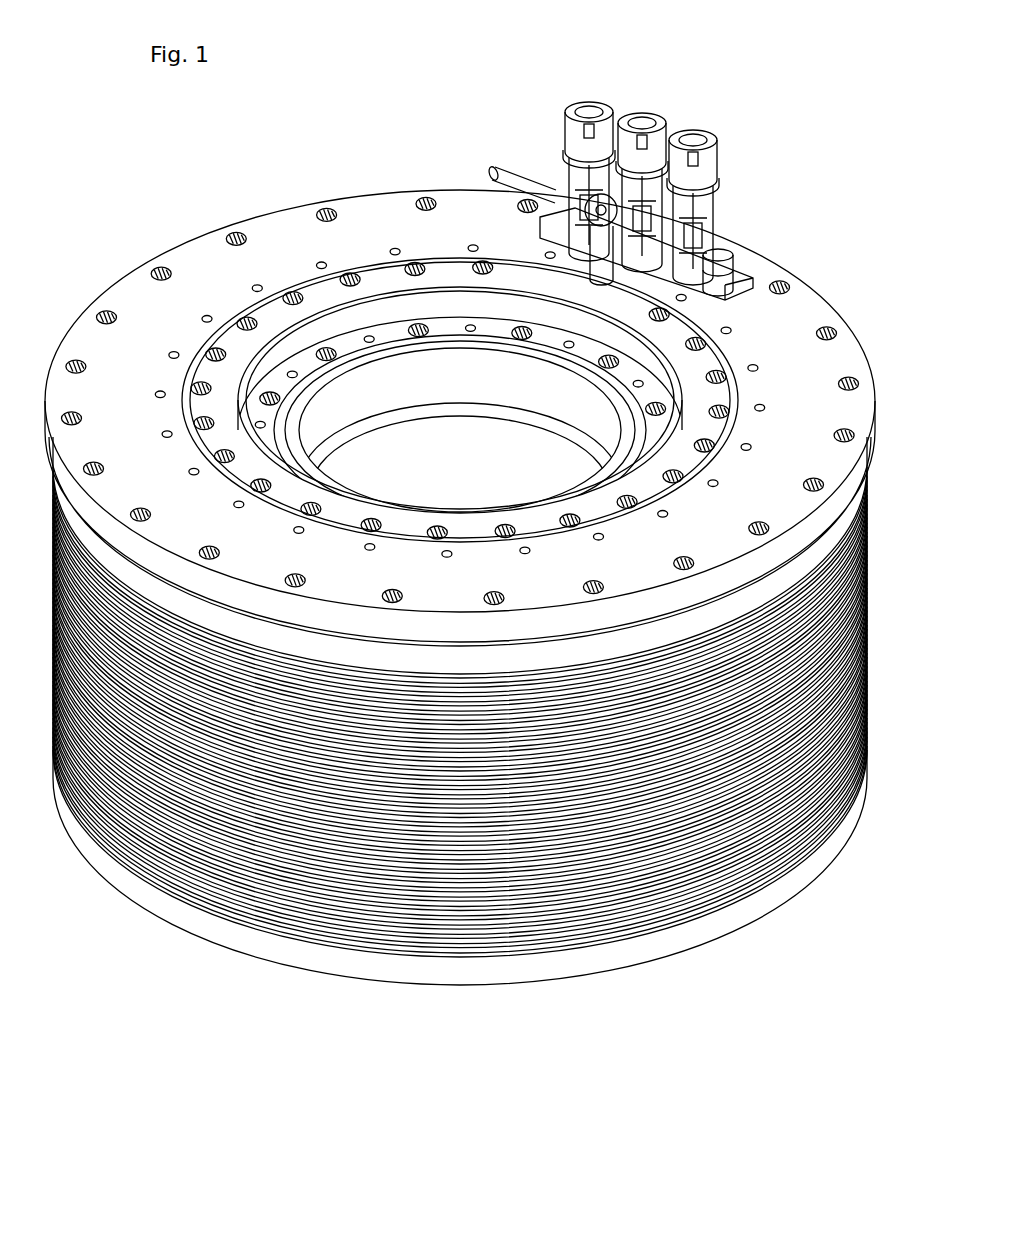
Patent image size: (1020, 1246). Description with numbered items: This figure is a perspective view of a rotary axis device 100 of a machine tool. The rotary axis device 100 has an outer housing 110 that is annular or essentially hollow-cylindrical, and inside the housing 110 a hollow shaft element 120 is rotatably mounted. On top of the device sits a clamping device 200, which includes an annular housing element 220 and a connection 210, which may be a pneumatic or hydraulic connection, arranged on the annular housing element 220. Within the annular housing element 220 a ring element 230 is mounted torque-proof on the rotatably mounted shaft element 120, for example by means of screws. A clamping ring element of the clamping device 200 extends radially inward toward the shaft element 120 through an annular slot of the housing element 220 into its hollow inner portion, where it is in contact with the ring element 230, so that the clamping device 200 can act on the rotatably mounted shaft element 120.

The rotary axis device 100 is at (396, 132).
The outer housing 110 is at (433, 968).
The hollow shaft element 120 is at (439, 455).
The clamping device 200 is at (327, 298).
The connection 210 is at (520, 185).
The annular housing element 220 is at (658, 484).
The ring element 230 is at (657, 392).